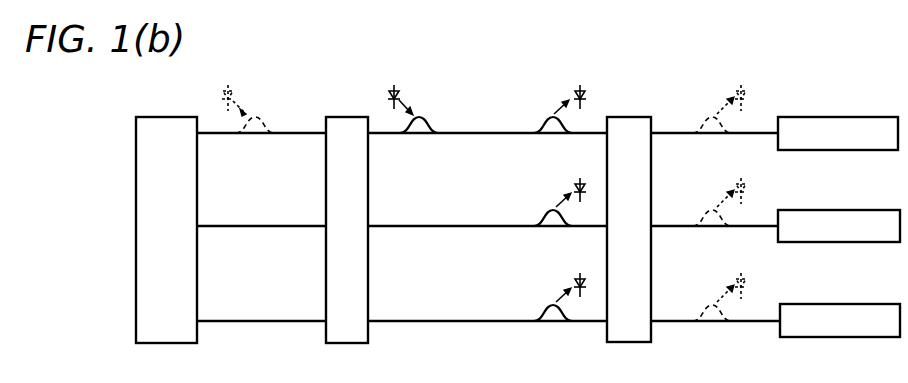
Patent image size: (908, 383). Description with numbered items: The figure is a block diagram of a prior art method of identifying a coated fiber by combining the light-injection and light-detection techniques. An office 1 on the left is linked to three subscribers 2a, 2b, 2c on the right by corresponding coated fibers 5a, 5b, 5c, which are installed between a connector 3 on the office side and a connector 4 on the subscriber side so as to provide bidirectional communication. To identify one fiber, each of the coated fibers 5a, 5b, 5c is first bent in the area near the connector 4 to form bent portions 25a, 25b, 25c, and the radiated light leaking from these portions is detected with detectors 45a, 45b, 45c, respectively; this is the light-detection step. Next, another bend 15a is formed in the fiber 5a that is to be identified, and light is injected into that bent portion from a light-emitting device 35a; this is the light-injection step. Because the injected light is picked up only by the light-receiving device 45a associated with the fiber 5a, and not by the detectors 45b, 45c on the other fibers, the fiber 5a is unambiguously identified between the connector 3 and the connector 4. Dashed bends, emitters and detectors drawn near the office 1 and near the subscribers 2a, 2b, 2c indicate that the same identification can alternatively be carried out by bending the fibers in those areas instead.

The office 1 is at (163, 117).
The connector on the office side 3 is at (345, 117).
The connector on the subscriber side 4 is at (628, 117).
The subscriber 2a is at (852, 117).
The subscriber 2b is at (854, 210).
The subscriber 2c is at (856, 304).
The coated fiber 5a is at (497, 132).
The coated fiber 5b is at (458, 225).
The coated fiber 5c is at (470, 320).
The bend 15a is at (457, 107).
The bent portion 25a is at (550, 117).
The bent portion 25b is at (547, 210).
The bent portion 25c is at (551, 305).
The light-emitting device 35a is at (398, 84).
The detector 45a is at (583, 84).
The detector 45b is at (580, 178).
The detector 45c is at (582, 273).